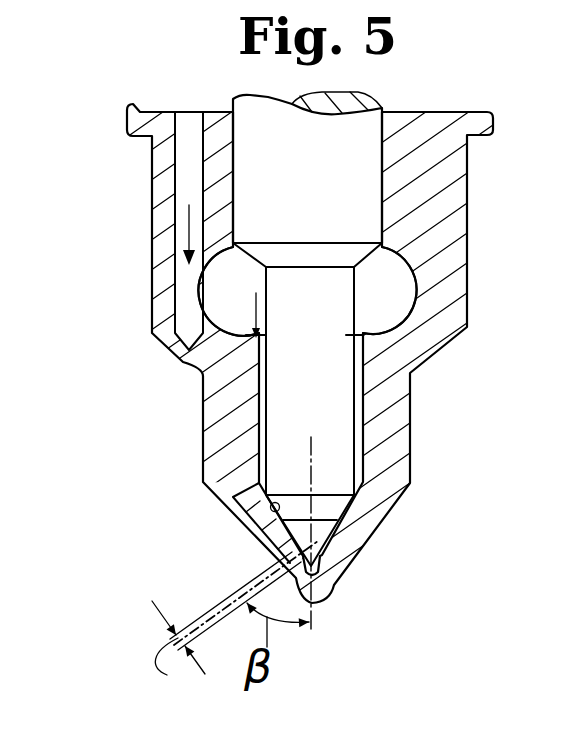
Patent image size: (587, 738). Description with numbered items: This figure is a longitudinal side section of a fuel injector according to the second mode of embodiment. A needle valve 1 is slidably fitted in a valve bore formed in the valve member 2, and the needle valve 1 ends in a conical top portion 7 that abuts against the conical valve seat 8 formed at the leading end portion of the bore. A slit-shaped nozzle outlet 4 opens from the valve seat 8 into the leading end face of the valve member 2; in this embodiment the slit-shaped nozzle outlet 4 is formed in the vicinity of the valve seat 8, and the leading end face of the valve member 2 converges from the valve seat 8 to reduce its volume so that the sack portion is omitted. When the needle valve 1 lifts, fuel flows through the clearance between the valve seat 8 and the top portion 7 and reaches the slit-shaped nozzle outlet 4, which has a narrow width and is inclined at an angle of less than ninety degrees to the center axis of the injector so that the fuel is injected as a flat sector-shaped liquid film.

The needle valve 1 is at (325, 320).
The valve member 2 is at (388, 411).
The slit-shaped nozzle outlet 4 is at (313, 616).
The conical top portion 7 is at (338, 521).
The conical valve seat 8 is at (251, 518).